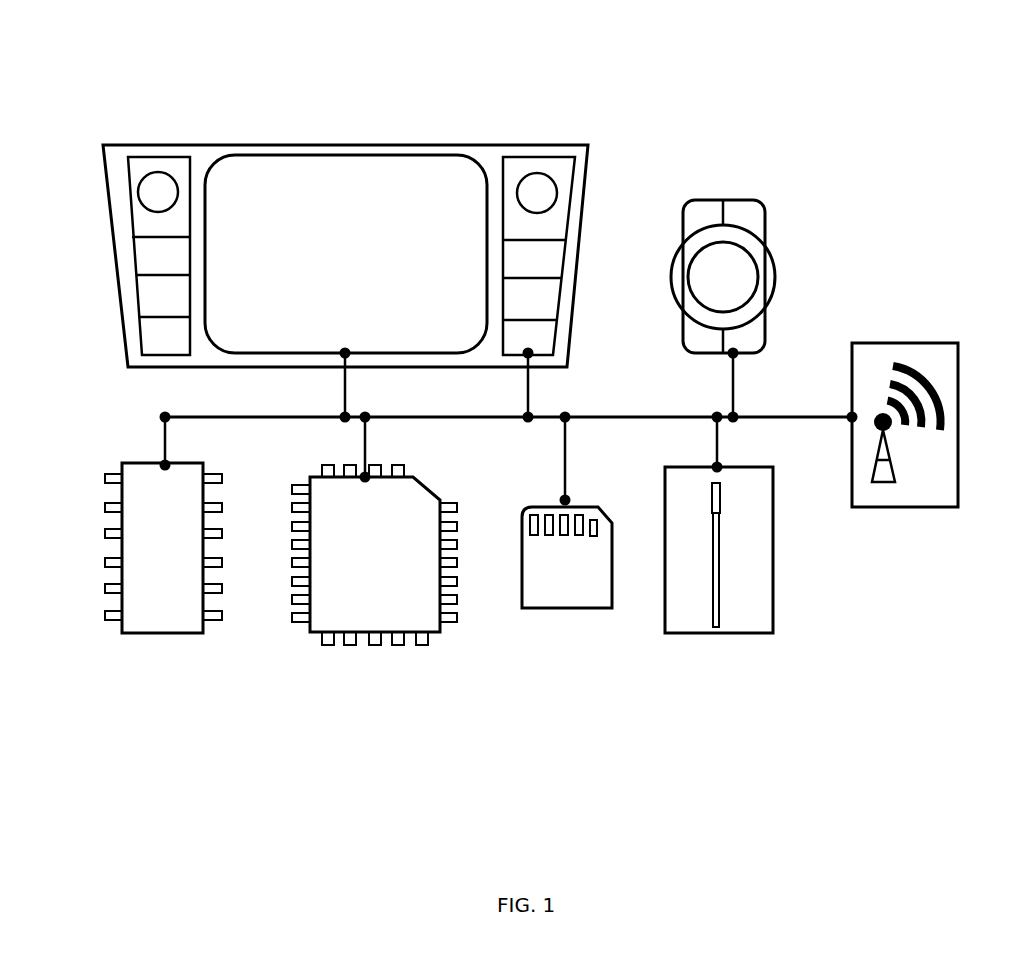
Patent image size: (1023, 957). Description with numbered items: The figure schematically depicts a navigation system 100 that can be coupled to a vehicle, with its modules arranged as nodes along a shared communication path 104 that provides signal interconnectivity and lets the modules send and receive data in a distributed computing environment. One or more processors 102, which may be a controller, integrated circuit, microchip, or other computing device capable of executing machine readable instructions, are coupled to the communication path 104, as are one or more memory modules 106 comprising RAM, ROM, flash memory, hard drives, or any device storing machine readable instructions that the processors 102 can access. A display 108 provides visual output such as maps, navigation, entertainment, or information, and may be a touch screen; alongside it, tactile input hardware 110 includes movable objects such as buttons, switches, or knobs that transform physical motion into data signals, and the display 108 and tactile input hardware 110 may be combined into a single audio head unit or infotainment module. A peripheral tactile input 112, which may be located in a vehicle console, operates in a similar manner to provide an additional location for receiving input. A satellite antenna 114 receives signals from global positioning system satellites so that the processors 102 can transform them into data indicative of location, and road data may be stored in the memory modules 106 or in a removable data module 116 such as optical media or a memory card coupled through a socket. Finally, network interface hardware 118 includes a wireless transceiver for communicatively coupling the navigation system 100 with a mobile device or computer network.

The navigation system 100 is at (124, 62).
The one or more processors 102 is at (365, 625).
The communication path 104 is at (232, 420).
The one or more memory modules 106 is at (163, 623).
The display 108 is at (368, 160).
The tactile input hardware 110 is at (122, 166).
The peripheral tactile input 112 is at (743, 202).
The satellite antenna 114 is at (740, 625).
The removable data module 116 is at (550, 598).
The network interface hardware 118 is at (900, 498).